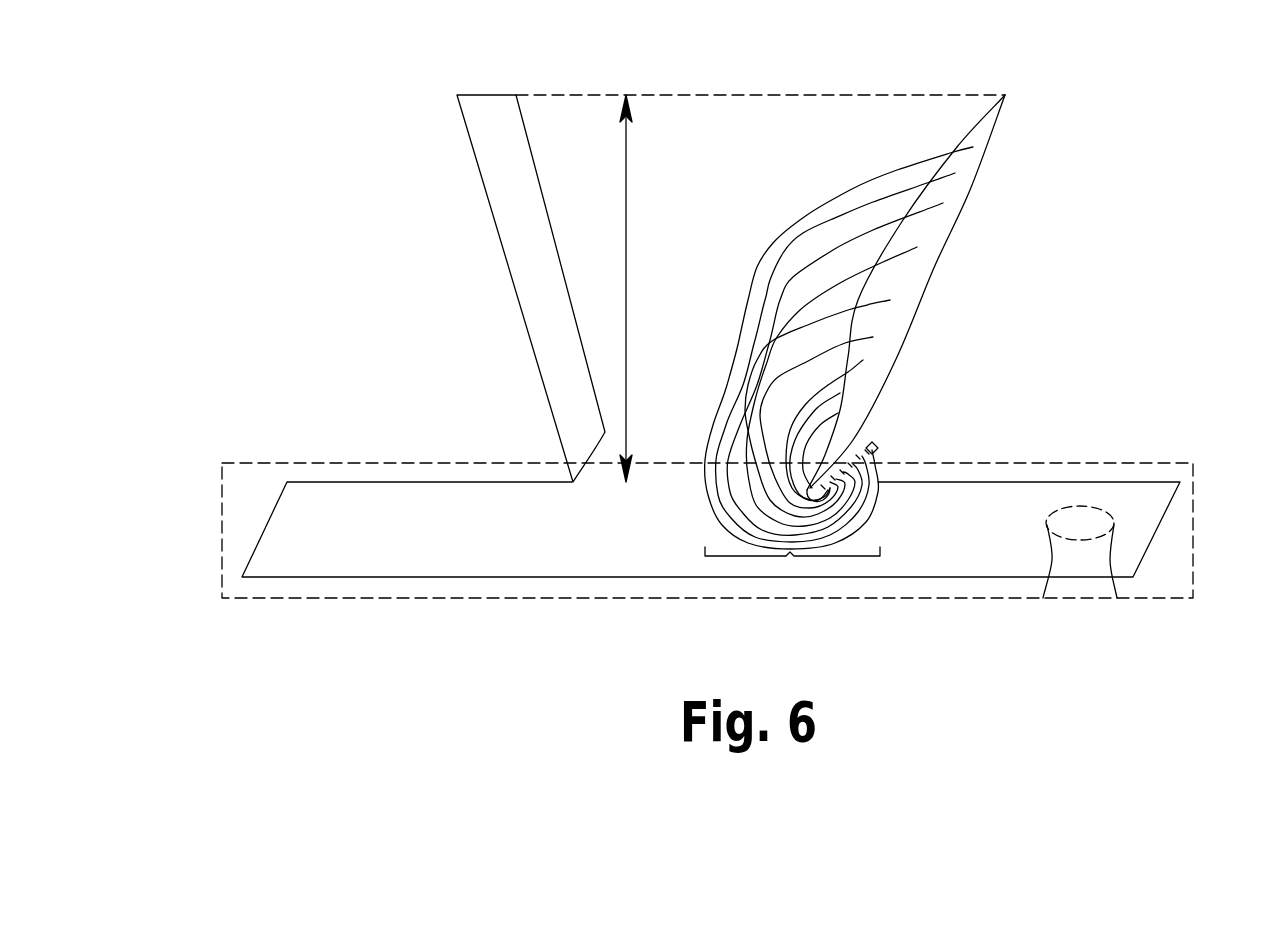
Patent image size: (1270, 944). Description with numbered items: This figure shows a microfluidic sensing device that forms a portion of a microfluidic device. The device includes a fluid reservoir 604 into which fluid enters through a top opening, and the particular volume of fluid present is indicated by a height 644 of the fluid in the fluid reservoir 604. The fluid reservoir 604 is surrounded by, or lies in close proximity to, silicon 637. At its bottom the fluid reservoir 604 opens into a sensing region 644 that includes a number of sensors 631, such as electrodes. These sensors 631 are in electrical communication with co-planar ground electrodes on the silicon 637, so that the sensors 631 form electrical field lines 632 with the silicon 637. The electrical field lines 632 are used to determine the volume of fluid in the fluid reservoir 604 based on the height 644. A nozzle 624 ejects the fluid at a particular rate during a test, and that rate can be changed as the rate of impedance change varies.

The fluid reservoir 604 is at (720, 122).
The nozzle 624 is at (1093, 518).
The sensors 631 is at (878, 442).
The electrical field lines 632 is at (791, 560).
The silicon 637 is at (557, 328).
The height 644 is at (625, 197).